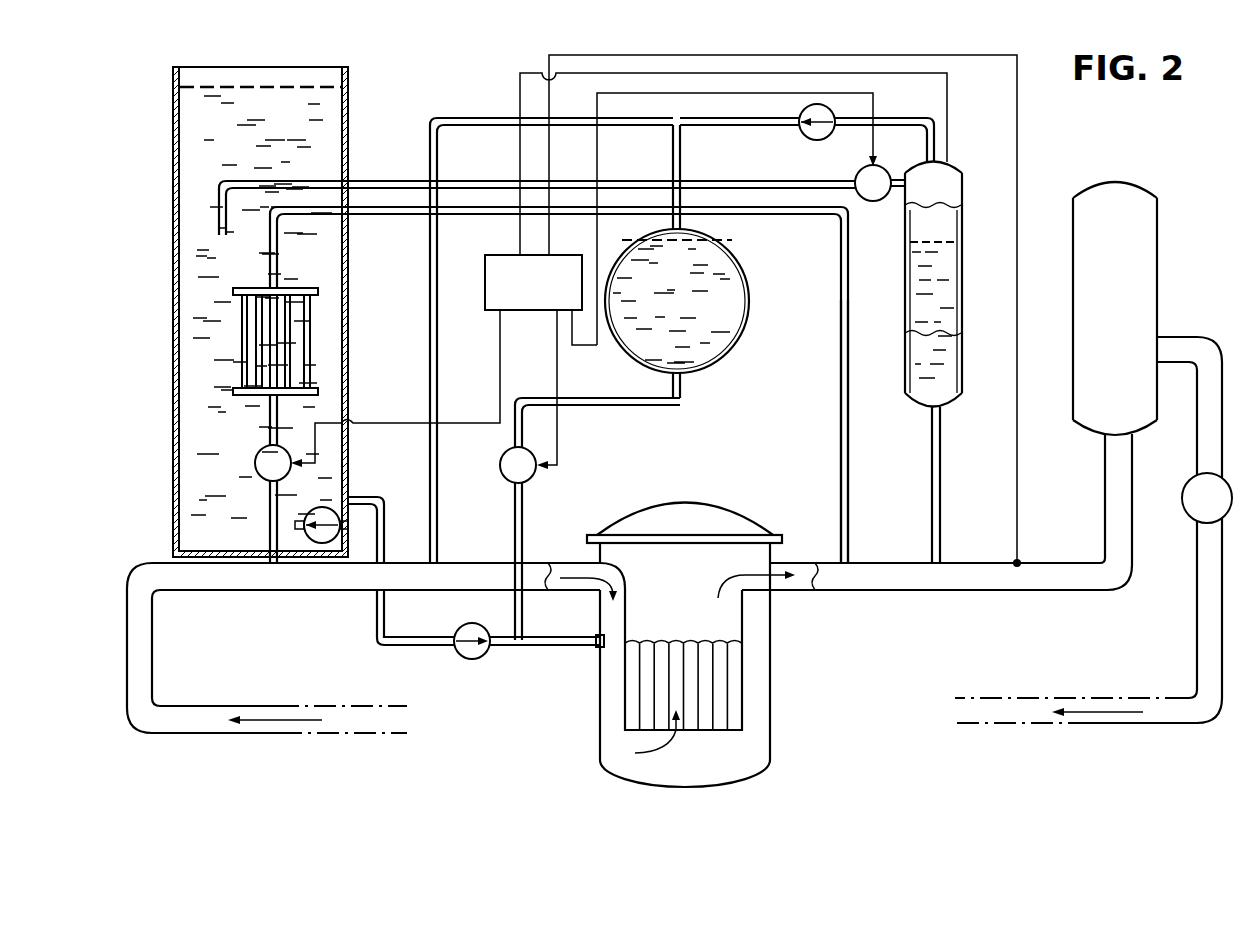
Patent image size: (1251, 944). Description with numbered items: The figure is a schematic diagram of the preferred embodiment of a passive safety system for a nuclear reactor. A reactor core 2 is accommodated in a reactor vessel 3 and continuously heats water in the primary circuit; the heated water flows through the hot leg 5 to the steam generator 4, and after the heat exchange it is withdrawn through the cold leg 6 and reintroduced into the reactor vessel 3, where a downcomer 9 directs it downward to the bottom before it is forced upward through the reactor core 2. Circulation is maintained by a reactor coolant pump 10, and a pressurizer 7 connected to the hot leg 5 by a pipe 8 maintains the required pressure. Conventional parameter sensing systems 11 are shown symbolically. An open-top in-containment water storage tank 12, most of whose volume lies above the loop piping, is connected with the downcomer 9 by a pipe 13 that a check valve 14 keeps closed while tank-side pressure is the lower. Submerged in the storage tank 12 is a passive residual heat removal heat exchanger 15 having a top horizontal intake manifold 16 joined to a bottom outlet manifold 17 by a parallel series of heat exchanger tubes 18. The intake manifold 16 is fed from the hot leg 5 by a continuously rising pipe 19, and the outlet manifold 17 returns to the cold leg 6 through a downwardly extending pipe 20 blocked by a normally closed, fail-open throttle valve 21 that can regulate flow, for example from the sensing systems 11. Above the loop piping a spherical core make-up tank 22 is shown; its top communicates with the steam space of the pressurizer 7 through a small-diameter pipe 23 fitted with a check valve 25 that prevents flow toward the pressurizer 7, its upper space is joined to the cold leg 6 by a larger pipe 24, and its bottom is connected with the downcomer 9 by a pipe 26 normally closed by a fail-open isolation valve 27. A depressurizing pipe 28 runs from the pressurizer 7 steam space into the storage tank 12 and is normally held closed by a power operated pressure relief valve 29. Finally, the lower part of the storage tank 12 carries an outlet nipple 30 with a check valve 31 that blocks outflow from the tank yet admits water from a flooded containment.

The reactor core 2 is at (740, 671).
The reactor vessel 3 is at (772, 706).
The steam generator 4 is at (1145, 248).
The hot leg 5 is at (972, 583).
The cold leg 6 is at (152, 672).
The pressurizer 7 is at (962, 290).
The pipe 8 is at (932, 453).
The downcomer 9 is at (612, 697).
The reactor coolant pump 10 is at (1184, 509).
The parameter sensing systems 11 is at (546, 296).
The in-containment water storage tank 12 is at (352, 104).
The pipe 13 is at (423, 648).
The check valve 14 is at (478, 659).
The passive residual heat removal heat exchanger 15 is at (493, 385).
The intake manifold 16 is at (240, 288).
The outlet manifold 17 is at (243, 396).
The heat exchanger tubes 18 is at (241, 365).
The pipe 19 is at (841, 404).
The pipe 20 is at (268, 432).
The throttle valve 21 is at (255, 465).
The core make-up tank 22 is at (748, 288).
The pipe 23 is at (750, 128).
The pipe 24 is at (430, 292).
The check valve 25 is at (808, 135).
The pipe 26 is at (640, 406).
The isolation valve 27 is at (532, 478).
The depressurizing pipe 28 is at (398, 181).
The pressure relief valve 29 is at (872, 201).
The outlet nipple 30 is at (350, 528).
The check valve 31 is at (330, 497).